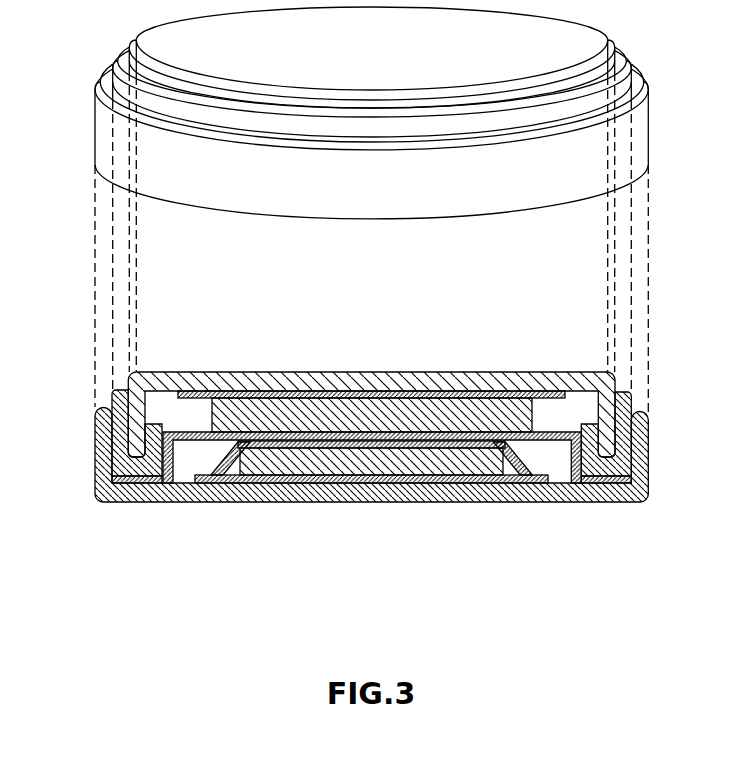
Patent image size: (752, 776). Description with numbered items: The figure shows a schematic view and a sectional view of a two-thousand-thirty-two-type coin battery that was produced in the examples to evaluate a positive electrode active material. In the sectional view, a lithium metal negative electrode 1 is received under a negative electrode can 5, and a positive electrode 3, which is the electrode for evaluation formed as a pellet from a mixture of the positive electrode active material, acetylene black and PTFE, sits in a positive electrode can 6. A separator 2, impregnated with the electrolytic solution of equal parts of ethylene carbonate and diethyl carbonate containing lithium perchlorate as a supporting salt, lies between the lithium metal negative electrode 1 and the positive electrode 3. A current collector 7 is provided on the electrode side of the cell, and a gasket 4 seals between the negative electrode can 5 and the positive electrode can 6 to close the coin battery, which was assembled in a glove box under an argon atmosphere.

The lithium metal negative electrode 1 is at (282, 410).
The separator 2 is at (148, 484).
The positive electrode 3 is at (345, 470).
The gasket 4 is at (120, 438).
The negative electrode can 5 is at (358, 386).
The positive electrode can 6 is at (268, 500).
The current collector 7 is at (195, 393).